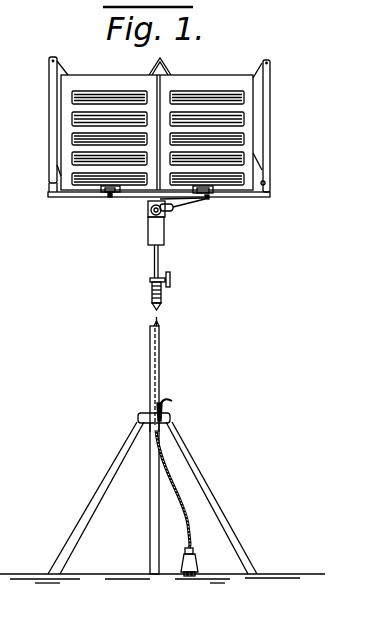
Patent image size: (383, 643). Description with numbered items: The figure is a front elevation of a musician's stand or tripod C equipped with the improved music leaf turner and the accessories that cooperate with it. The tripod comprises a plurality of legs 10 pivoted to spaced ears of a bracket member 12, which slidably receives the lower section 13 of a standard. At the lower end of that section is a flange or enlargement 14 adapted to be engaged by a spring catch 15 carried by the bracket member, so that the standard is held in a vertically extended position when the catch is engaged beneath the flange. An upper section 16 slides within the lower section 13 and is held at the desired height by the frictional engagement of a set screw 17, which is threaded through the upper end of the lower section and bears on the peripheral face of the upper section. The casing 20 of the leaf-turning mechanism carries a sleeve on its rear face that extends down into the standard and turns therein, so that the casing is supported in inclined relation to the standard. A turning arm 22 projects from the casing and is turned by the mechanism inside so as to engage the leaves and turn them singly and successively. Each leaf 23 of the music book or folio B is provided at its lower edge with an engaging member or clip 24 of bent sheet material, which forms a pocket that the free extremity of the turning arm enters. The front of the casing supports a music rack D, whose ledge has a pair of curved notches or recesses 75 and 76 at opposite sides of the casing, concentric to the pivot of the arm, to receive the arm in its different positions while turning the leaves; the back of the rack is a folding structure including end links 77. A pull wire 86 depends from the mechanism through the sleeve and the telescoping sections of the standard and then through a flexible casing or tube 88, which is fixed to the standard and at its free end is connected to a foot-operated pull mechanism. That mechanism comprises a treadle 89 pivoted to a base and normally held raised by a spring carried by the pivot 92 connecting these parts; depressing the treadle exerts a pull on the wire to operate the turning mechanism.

The legs 10 is at (148, 495).
The bracket member 12 is at (150, 421).
The lower section of standard 13 is at (159, 353).
The flange or enlargement 14 is at (151, 428).
The spring catch 15 is at (173, 404).
The upper section of standard 16 is at (153, 252).
The set screw 17 is at (171, 282).
The casing 20 is at (150, 205).
The turning arm 22 is at (203, 201).
The leaf 23 is at (182, 83).
The engaging member or clip 24 is at (103, 194).
The curved notch or recess 75 is at (208, 199).
The curved notch or recess 76 is at (109, 197).
The end links 77 is at (55, 107).
The pull wire 86 is at (158, 311).
The flexible casing or tube 88 is at (149, 335).
The treadle 89 is at (198, 565).
The pivot 92 is at (190, 577).
The music book or folio B is at (247, 87).
The musician's stand or tripod C is at (144, 368).
The music rack D is at (274, 147).